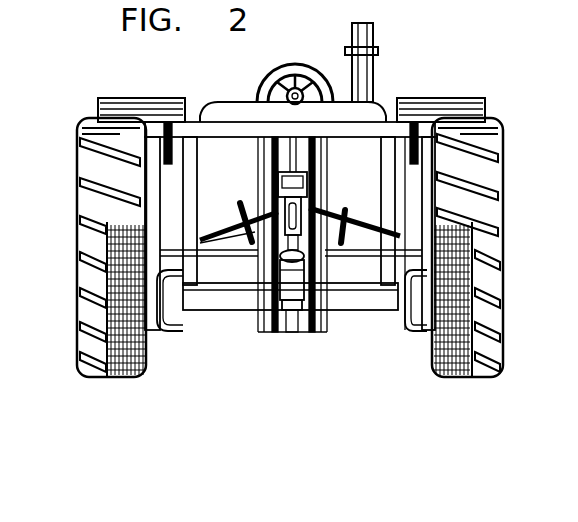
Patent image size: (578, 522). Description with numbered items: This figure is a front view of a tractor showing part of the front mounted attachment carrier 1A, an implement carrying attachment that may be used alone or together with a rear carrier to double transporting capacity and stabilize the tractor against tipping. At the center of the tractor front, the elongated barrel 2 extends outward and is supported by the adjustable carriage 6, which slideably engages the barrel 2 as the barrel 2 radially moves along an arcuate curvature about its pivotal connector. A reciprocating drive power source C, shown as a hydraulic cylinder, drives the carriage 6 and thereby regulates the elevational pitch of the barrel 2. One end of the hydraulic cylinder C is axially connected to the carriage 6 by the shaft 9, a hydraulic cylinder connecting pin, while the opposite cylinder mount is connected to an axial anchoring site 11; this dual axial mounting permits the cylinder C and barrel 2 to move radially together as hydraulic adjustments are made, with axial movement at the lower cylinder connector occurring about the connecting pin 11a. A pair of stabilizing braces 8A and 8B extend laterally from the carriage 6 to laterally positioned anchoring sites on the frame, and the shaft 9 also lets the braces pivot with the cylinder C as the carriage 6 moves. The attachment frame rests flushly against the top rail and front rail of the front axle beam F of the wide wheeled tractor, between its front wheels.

The elongated barrel 2 is at (288, 137).
The adjustable carriage 6 is at (278, 183).
The shaft 9 is at (312, 208).
The front mounted attachment carrier 1A is at (346, 181).
The stabilizing brace 8A is at (222, 253).
The stabilizing brace 8B is at (384, 248).
The reciprocating drive power source C is at (282, 287).
The front axle beam F is at (390, 312).
The axial anchoring site 11 is at (283, 337).
The connecting pin 11a is at (337, 336).